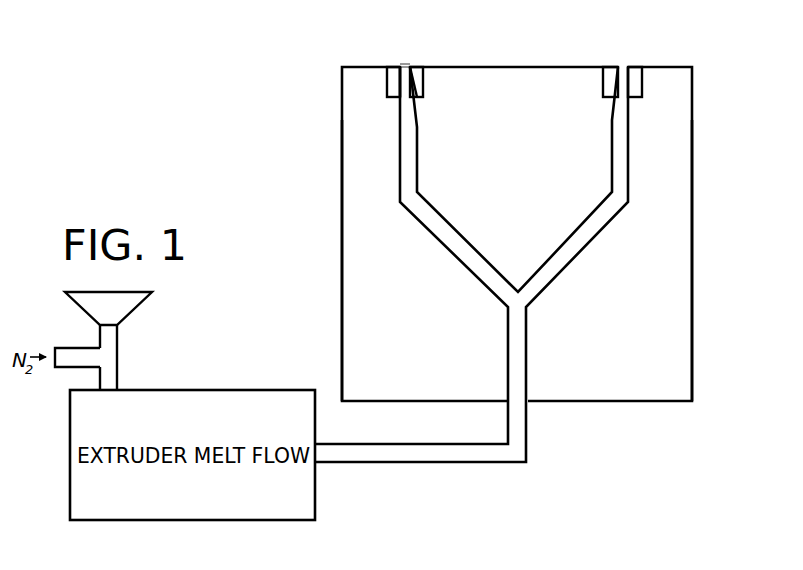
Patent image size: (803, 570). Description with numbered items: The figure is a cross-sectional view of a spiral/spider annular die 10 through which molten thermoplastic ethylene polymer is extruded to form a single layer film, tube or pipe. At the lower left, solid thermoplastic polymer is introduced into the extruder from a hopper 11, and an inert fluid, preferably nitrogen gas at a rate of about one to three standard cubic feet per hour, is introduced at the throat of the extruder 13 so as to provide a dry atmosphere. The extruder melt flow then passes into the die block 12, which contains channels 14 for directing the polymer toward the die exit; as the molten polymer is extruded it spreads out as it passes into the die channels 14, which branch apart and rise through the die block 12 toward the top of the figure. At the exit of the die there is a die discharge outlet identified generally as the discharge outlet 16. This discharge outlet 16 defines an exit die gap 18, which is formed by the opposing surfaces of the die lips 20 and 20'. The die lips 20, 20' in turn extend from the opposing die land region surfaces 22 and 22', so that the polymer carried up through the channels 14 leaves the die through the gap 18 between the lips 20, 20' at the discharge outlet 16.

The spiral/spider annular die 10 is at (334, 163).
The hopper 11 is at (119, 352).
The die block 12 is at (342, 271).
The throat of the extruder 13 is at (98, 340).
The channels 14 is at (585, 237).
The die discharge outlet 16 is at (403, 60).
The exit die gap 18 is at (407, 63).
The die lip 20 is at (378, 65).
The die lip 20' is at (437, 60).
The die land region surface 22 is at (373, 93).
The die land region surface 22' is at (443, 87).